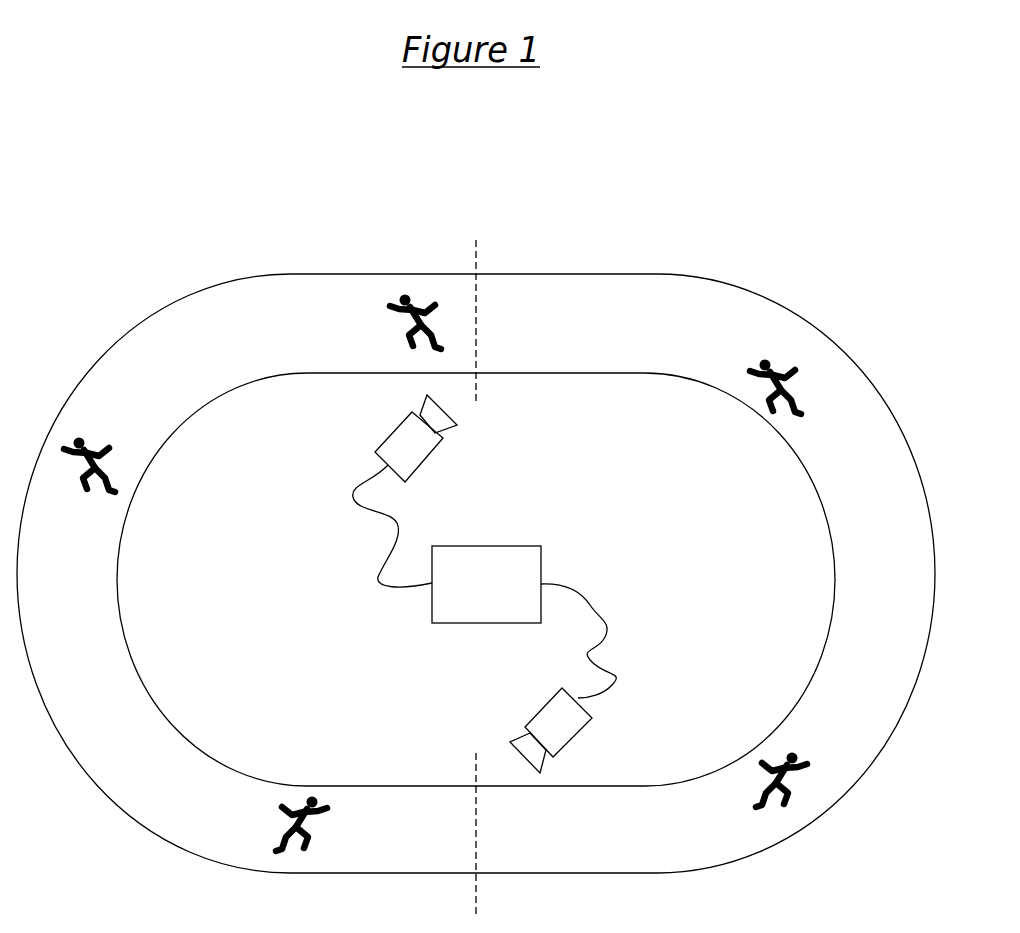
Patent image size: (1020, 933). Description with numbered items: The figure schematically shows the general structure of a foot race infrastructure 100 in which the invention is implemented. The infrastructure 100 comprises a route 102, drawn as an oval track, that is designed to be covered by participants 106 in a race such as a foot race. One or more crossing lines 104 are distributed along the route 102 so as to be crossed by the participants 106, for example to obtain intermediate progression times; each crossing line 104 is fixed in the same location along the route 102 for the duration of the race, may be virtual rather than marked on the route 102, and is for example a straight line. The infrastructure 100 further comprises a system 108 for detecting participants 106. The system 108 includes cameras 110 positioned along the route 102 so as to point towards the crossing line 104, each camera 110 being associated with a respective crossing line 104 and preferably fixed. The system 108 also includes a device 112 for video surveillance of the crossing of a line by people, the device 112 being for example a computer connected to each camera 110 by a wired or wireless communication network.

The foot race infrastructure 100 is at (165, 191).
The route 102 is at (185, 304).
The crossing line 104 is at (477, 249).
The participant 106 is at (393, 318).
The system for detecting participants 108 is at (315, 685).
The camera 110 is at (378, 445).
The device for video surveillance 112 is at (511, 598).